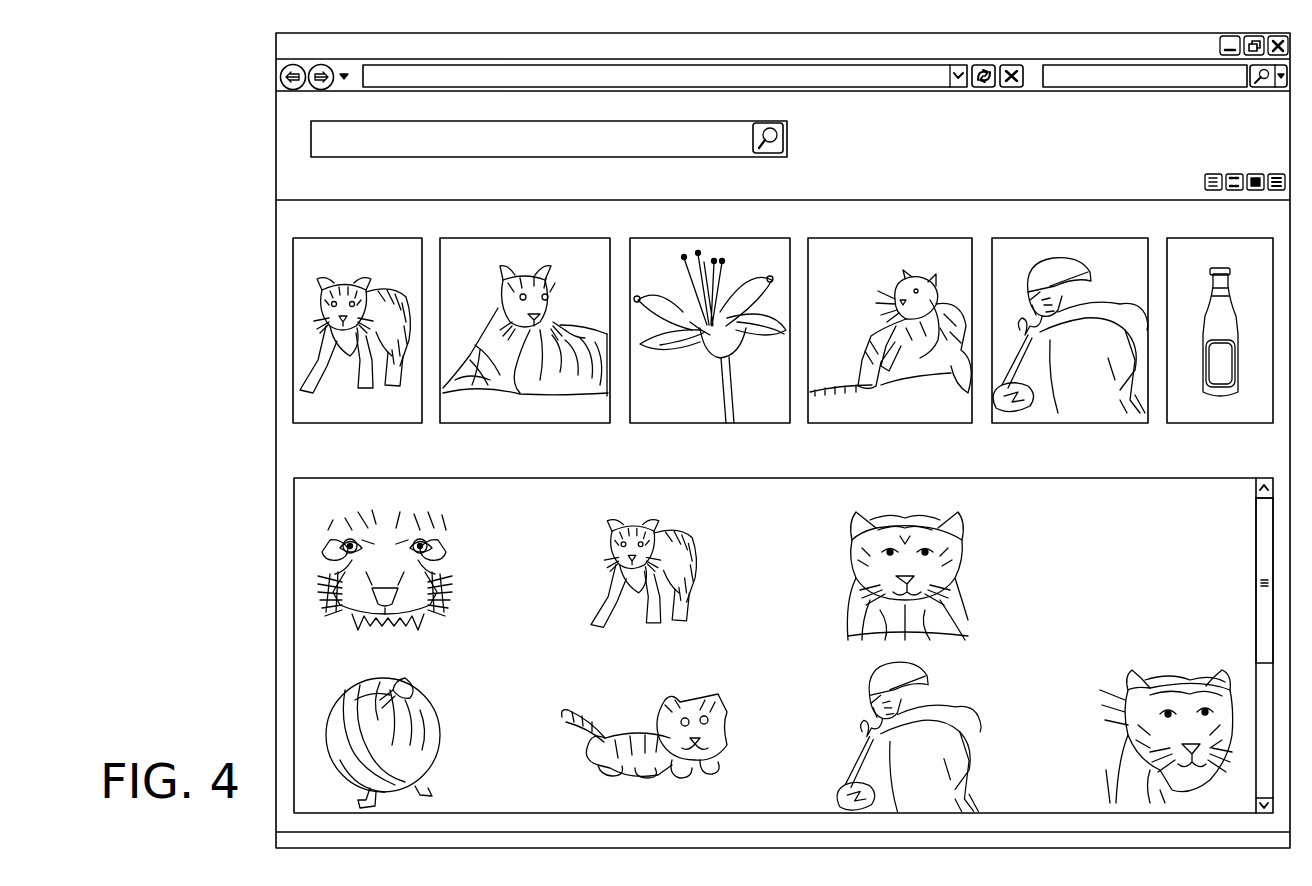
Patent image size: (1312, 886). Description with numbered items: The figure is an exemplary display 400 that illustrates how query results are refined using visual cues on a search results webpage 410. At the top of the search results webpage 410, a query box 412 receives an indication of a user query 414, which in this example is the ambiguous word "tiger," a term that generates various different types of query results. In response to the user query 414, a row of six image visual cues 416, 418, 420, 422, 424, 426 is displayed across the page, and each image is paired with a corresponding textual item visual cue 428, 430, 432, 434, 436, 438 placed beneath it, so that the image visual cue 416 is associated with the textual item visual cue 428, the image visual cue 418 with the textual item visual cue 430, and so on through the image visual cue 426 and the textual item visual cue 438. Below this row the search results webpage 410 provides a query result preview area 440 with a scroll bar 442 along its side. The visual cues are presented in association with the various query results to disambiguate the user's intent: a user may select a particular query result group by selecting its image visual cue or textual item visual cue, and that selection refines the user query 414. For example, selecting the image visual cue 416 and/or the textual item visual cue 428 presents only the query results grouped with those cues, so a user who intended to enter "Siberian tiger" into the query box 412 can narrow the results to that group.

The exemplary display 400 is at (148, 117).
The search results webpage 410 is at (276, 47).
The query box 412 is at (788, 137).
The user query 414 is at (352, 121).
The image visual cue 416 is at (355, 238).
The image visual cue 418 is at (524, 238).
The image visual cue 420 is at (704, 238).
The image visual cue 422 is at (885, 238).
The image visual cue 424 is at (1064, 238).
The image visual cue 426 is at (1210, 238).
The textual item visual cue 428 is at (304, 438).
The textual item visual cue 430 is at (490, 439).
The textual item visual cue 432 is at (680, 439).
The textual item visual cue 434 is at (857, 439).
The textual item visual cue 436 is at (1037, 439).
The textual item visual cue 438 is at (1188, 439).
The query result preview area 440 is at (294, 490).
The scroll bar 442 is at (1260, 510).